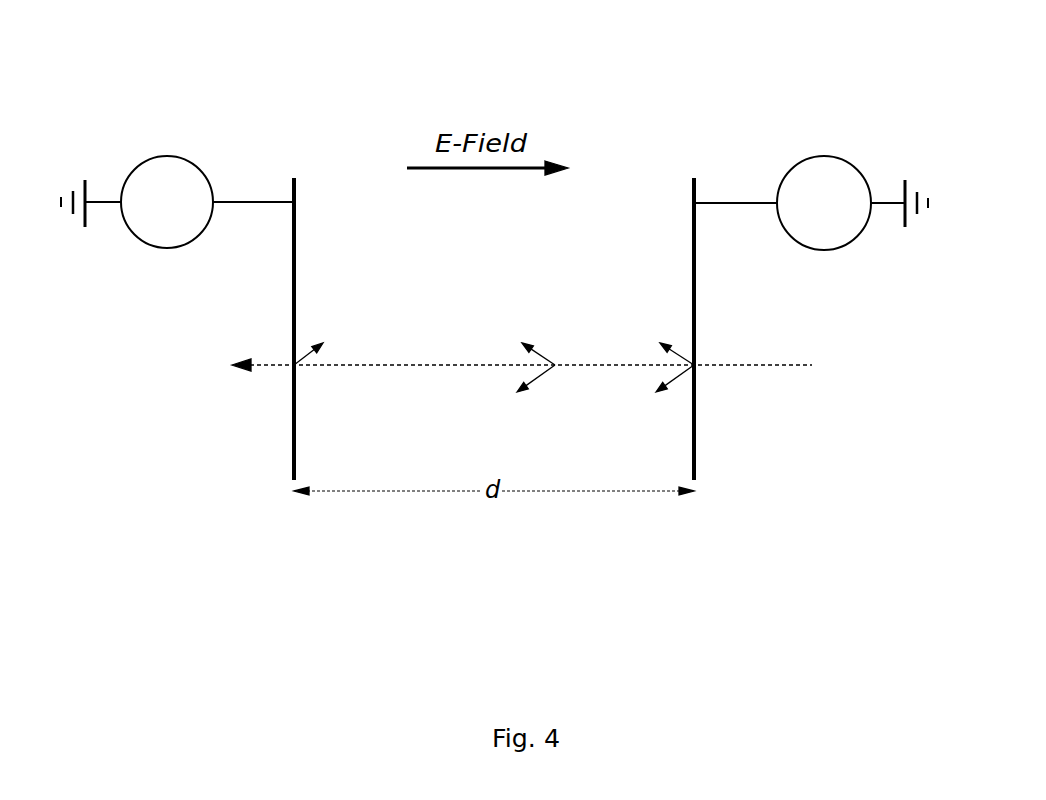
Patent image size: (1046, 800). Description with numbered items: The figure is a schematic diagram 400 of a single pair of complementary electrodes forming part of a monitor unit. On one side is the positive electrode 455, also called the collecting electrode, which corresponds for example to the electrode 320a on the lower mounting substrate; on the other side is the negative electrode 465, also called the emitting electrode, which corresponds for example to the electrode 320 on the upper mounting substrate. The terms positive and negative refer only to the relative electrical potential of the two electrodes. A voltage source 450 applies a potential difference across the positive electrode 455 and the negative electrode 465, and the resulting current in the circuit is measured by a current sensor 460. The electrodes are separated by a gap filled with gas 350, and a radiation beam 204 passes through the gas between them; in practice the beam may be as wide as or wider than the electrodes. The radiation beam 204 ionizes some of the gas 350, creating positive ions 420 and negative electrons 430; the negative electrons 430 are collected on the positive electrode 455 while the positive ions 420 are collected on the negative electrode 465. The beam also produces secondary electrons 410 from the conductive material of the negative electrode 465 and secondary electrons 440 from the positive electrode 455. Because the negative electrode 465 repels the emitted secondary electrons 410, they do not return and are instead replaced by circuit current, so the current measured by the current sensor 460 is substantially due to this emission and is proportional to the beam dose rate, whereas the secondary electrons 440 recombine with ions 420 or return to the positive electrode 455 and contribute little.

The gas detection system 400 is at (538, 62).
The voltage source 450 is at (155, 167).
The current sensor 460 is at (813, 177).
The gas 350 is at (537, 258).
The positive electrode 455 is at (292, 447).
The electrode 320a is at (181, 333).
The negative electrode 465 is at (697, 447).
The electrode 320 is at (805, 333).
The radiation beam 204 is at (745, 363).
The secondary electrons 440 is at (343, 322).
The positive ions 420 is at (503, 330).
The negative electrons 430 is at (503, 400).
The secondary electrons 410 is at (652, 330).